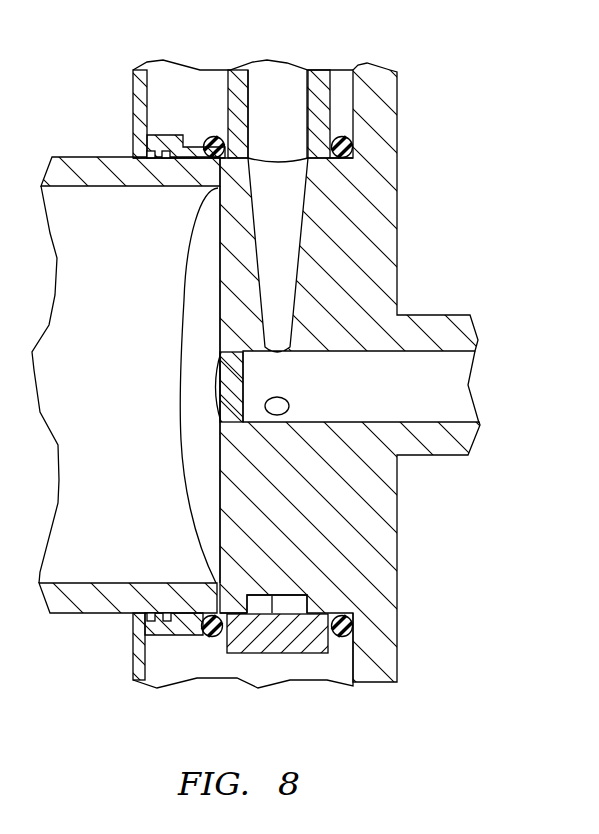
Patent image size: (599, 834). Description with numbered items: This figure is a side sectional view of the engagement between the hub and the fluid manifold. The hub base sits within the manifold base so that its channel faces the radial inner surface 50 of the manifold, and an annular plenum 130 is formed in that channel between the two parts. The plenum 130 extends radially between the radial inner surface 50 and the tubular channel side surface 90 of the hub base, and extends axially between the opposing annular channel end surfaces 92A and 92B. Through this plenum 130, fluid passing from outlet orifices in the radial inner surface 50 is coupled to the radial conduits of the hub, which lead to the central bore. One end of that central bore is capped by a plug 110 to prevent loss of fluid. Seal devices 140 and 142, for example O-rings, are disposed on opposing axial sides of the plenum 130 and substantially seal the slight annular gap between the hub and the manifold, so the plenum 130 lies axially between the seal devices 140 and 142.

The radial inner surface 50 is at (287, 604).
The channel side surface 90 is at (265, 615).
The channel end surface 92A is at (255, 610).
The channel end surface 92B is at (290, 608).
The plug 110 is at (232, 402).
The annular plenum 130 is at (307, 603).
The seal device 140 is at (214, 137).
The seal device 142 is at (354, 148).